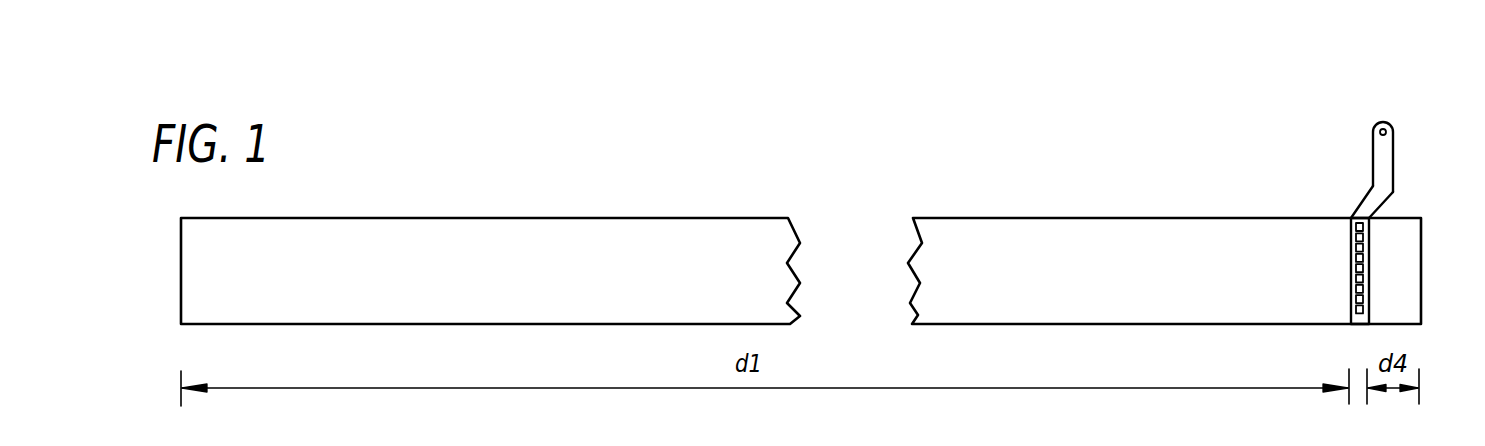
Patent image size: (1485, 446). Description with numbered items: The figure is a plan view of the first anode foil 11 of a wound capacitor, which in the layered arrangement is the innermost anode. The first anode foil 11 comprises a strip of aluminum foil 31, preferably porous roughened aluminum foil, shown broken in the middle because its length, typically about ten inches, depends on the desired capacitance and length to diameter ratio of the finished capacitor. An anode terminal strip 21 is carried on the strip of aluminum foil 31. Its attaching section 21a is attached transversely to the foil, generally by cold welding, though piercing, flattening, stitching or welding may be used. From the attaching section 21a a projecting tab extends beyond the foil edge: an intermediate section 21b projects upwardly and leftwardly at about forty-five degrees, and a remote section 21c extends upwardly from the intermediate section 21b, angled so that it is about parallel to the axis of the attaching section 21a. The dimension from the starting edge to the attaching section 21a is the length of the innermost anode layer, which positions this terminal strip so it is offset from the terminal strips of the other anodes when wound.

The first anode foil 11 is at (801, 225).
The anode terminal strip 21 is at (1317, 192).
The attaching section 21a is at (1350, 268).
The intermediate section 21b is at (1366, 207).
The remote section 21c is at (1380, 158).
The strip of aluminum foil 31 is at (673, 287).